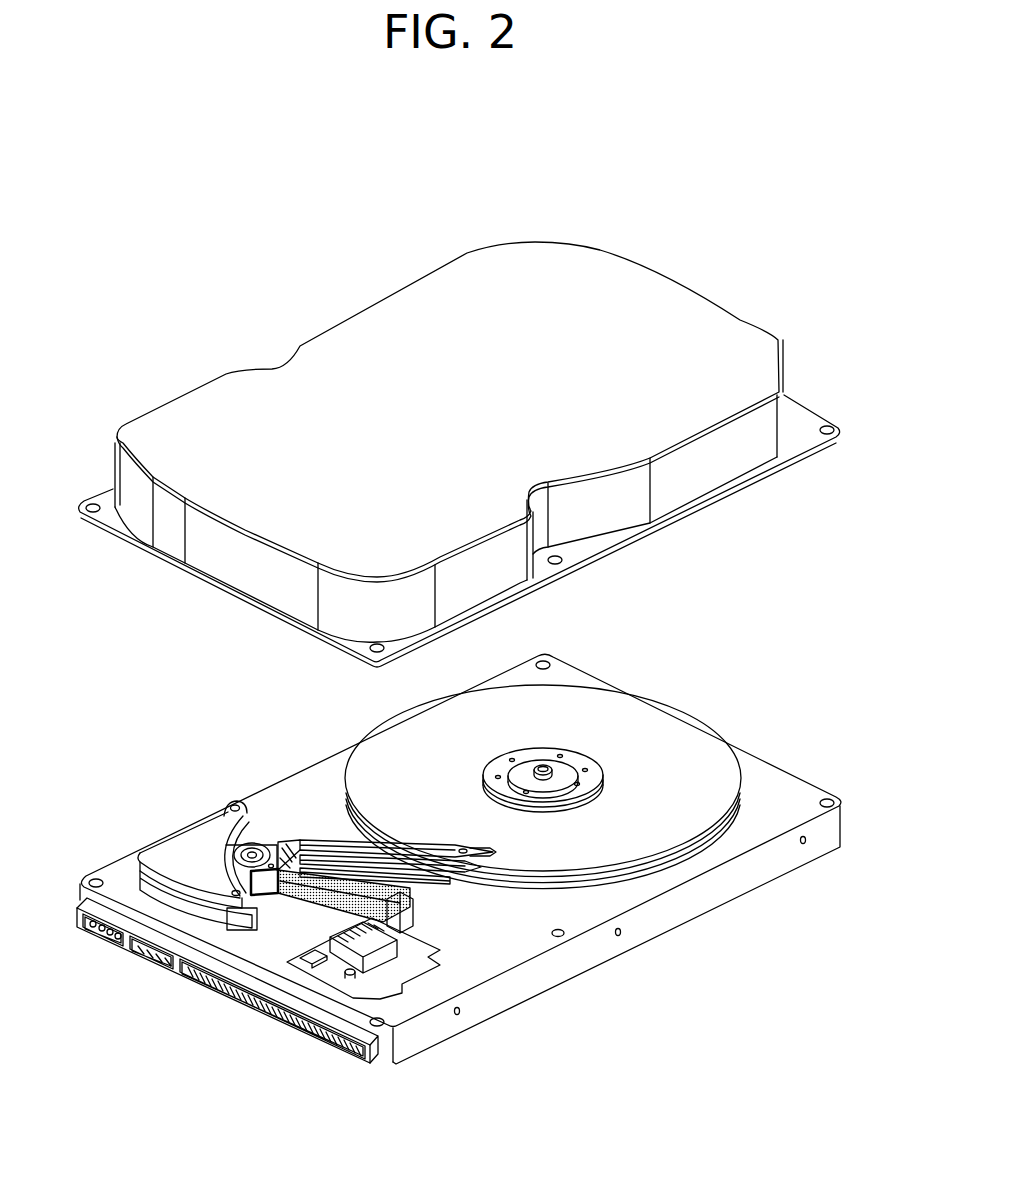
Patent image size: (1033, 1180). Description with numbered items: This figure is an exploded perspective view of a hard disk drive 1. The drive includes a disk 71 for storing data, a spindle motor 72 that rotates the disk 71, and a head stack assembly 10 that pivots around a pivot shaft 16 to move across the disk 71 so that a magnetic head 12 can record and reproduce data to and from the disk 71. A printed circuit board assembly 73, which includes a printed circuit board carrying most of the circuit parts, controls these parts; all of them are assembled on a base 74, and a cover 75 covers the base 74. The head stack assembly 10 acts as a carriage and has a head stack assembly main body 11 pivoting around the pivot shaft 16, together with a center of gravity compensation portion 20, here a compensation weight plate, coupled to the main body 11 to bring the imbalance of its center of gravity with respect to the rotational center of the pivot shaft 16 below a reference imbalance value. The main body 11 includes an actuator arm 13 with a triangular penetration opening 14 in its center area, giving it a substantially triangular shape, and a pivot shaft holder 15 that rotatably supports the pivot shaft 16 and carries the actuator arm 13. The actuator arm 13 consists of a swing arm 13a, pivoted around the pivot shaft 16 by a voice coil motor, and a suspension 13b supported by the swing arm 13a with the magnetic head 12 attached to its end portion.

The hard disk drive 1 is at (126, 686).
The head stack assembly 10 is at (313, 703).
The head stack assembly main body 11 is at (327, 828).
The magnetic head 12 is at (491, 856).
The actuator arm 13 is at (397, 763).
The swing arm 13a is at (381, 845).
The suspension 13b is at (476, 848).
The triangular penetration opening 14 is at (315, 900).
The pivot shaft holder 15 is at (234, 805).
The pivot shaft 16 is at (226, 828).
The center of gravity compensation portion 20 is at (281, 840).
The disk 71 is at (718, 770).
The spindle motor 72 is at (568, 765).
The printed circuit board assembly 73 is at (364, 1064).
The base 74 is at (785, 805).
The cover 75 is at (706, 316).